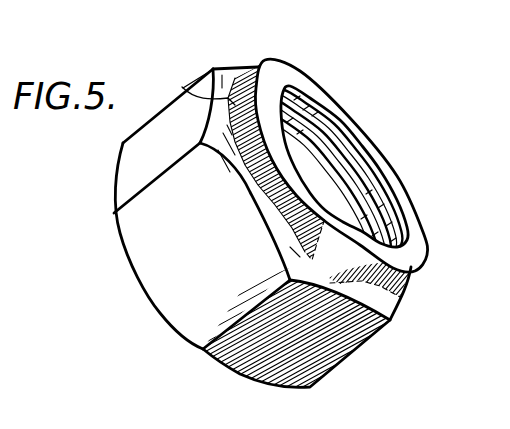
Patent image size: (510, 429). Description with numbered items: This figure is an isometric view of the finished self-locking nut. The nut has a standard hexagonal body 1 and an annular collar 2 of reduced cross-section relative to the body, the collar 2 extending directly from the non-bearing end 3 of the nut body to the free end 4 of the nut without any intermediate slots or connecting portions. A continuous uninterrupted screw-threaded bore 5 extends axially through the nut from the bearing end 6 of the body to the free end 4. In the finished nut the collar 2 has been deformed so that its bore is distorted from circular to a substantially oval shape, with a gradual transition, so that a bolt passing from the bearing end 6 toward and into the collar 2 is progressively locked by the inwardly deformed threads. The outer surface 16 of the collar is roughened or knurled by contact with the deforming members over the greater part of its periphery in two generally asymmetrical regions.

The hexagonal body 1 is at (322, 346).
The collar 2 is at (258, 66).
The non-bearing end 3 is at (233, 70).
The free end 4 is at (375, 142).
The screw-threaded bore 5 is at (316, 131).
The bearing end 6 is at (163, 313).
The outer surface 16 is at (193, 87).